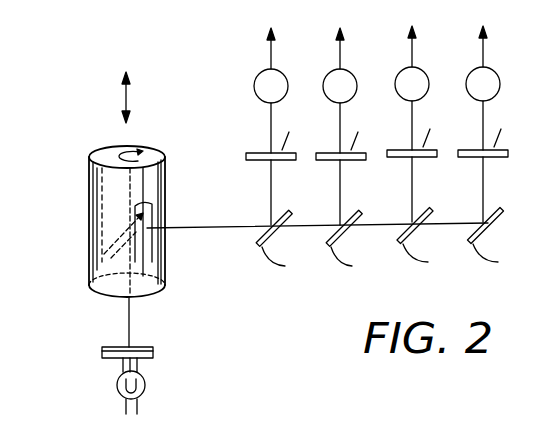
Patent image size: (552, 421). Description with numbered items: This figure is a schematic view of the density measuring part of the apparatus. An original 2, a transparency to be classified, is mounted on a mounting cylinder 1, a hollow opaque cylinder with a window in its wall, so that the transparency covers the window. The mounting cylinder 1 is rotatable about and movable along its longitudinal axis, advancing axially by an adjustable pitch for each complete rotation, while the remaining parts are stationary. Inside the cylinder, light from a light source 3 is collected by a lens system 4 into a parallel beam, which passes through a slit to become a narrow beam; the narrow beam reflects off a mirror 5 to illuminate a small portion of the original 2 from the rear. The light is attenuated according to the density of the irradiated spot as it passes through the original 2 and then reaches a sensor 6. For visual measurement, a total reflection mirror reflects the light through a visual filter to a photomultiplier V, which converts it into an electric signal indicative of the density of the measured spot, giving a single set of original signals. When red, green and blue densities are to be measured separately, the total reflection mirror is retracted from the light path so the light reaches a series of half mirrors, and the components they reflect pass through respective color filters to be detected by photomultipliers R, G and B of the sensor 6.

The mounting cylinder 1 is at (100, 193).
The original 2 is at (157, 245).
The light source 3 is at (117, 384).
The lens system 4 is at (102, 351).
The mirror 5 is at (108, 233).
The sensor 6 is at (394, 300).
The photomultiplier V is at (283, 72).
The photomultiplier R is at (352, 72).
The photomultiplier G is at (424, 70).
The photomultiplier B is at (495, 70).